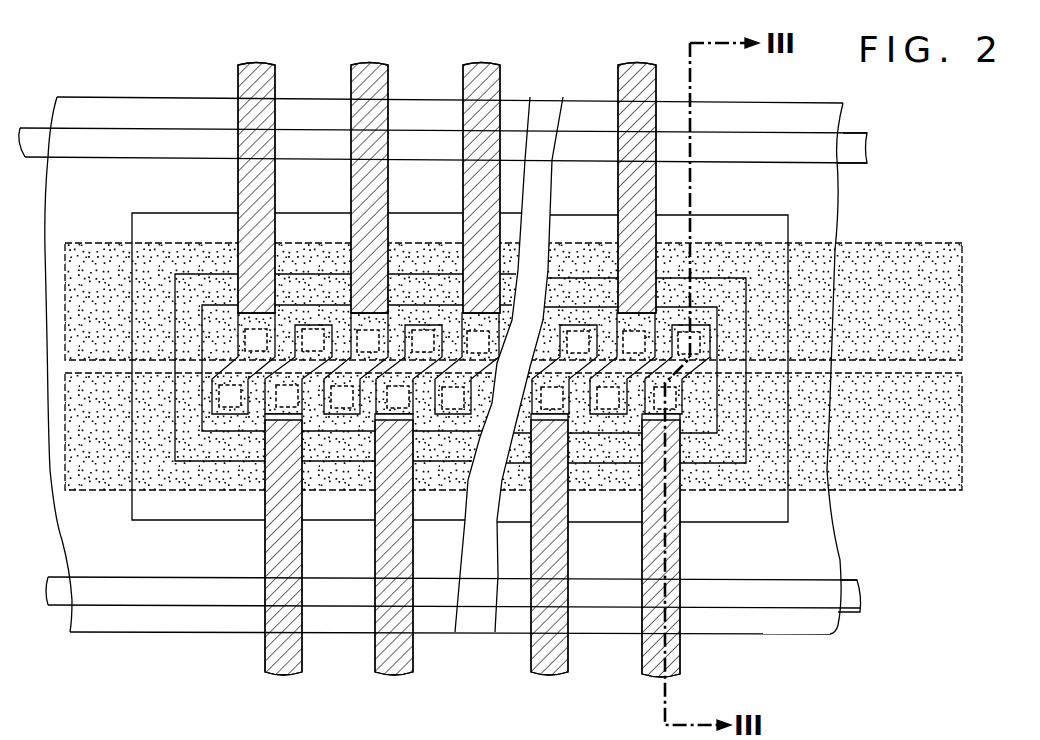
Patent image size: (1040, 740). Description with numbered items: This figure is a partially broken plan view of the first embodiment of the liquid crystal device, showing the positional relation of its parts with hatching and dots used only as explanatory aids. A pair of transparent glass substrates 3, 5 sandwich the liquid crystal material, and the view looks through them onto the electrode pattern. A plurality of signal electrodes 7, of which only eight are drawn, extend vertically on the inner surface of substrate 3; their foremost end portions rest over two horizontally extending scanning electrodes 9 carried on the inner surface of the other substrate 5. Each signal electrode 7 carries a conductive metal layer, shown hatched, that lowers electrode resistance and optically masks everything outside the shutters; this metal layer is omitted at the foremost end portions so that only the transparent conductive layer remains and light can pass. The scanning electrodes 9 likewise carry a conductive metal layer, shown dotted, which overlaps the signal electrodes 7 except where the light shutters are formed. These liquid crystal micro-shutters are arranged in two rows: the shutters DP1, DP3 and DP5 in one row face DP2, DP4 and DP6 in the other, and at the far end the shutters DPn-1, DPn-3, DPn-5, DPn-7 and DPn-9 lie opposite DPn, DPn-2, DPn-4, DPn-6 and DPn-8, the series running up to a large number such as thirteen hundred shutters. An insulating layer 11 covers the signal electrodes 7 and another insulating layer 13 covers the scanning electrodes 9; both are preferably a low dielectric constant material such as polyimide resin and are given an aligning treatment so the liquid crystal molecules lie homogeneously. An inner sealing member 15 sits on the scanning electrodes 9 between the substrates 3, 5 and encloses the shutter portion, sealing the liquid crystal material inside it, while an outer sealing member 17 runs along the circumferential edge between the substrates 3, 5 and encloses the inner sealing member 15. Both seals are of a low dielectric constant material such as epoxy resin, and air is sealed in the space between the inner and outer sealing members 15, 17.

The transparent substrate 3 is at (443, 358).
The transparent substrate 5 is at (122, 102).
The signal electrode 7 is at (258, 63).
The scanning electrode 9 is at (935, 270).
The insulating layer 11 is at (468, 392).
The insulating layer 13 is at (760, 523).
The inner sealing member 15 is at (725, 296).
The outer sealing member 17 is at (860, 150).
The light shutter DPn is at (224, 404).
The light shutter DPn-1 is at (245, 336).
The light shutter DPn-2 is at (288, 403).
The light shutter DPn-3 is at (311, 329).
The light shutter DPn-4 is at (341, 405).
The light shutter DPn-5 is at (368, 330).
The light shutter DPn-6 is at (397, 405).
The light shutter DPn-7 is at (423, 330).
The light shutter DPn-8 is at (453, 405).
The light shutter DPn-9 is at (476, 331).
The light shutter DP1 is at (700, 337).
The light shutter DP2 is at (676, 398).
The light shutter DP3 is at (640, 329).
The light shutter DP4 is at (608, 410).
The light shutter DP5 is at (579, 331).
The light shutter DP6 is at (552, 410).